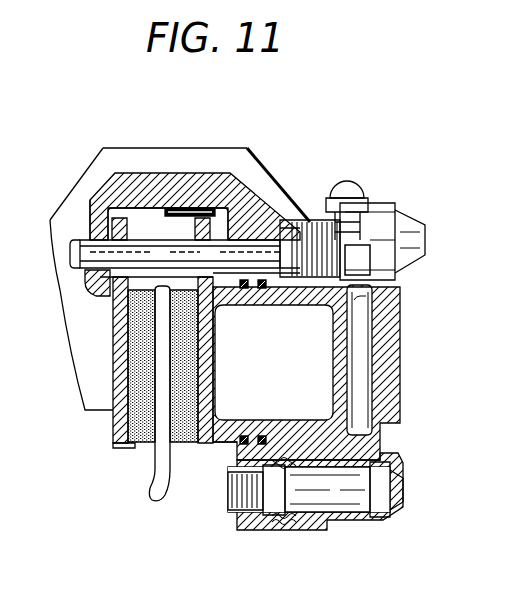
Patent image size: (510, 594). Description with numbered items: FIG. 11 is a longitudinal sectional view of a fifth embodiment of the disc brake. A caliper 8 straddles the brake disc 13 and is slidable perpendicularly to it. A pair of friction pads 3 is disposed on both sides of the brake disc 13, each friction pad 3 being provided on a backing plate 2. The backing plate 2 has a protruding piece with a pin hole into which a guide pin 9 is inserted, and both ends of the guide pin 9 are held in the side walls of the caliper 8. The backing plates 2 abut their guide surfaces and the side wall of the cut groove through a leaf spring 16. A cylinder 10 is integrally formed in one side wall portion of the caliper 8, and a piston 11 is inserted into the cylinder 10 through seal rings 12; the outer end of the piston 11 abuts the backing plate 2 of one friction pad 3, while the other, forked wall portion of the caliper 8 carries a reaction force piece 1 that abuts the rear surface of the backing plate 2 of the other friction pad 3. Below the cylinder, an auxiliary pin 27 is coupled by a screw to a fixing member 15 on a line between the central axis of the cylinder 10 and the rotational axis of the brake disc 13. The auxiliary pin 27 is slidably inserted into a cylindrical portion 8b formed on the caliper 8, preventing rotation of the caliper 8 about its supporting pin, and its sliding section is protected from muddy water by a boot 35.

The reaction force piece 1 is at (85, 389).
The backing plate 2 is at (120, 438).
The friction pad 3 is at (140, 438).
The caliper 8 is at (255, 163).
The cylindrical portion 8b is at (318, 521).
The guide pin 9 is at (83, 251).
The cylinder 10 is at (349, 336).
The piston 11 is at (335, 361).
The seal rings 12 is at (248, 447).
The brake disc 13 is at (147, 491).
The fixing member 15 is at (248, 522).
The leaf spring 16 is at (182, 214).
The auxiliary pin 27 is at (340, 495).
The boot 35 is at (290, 519).